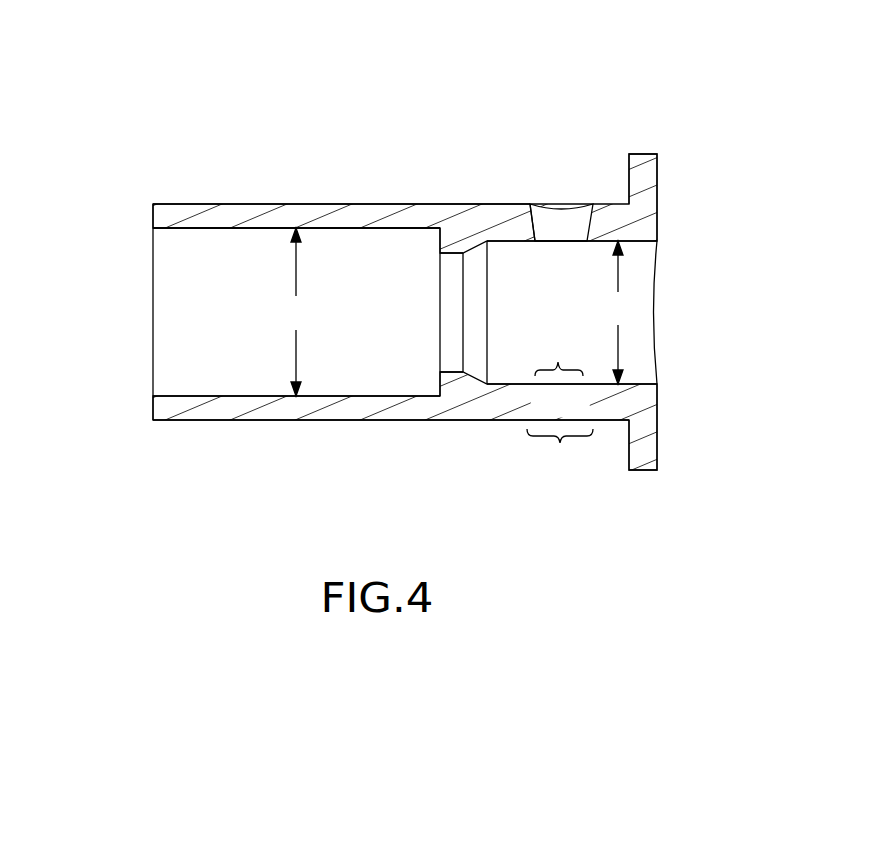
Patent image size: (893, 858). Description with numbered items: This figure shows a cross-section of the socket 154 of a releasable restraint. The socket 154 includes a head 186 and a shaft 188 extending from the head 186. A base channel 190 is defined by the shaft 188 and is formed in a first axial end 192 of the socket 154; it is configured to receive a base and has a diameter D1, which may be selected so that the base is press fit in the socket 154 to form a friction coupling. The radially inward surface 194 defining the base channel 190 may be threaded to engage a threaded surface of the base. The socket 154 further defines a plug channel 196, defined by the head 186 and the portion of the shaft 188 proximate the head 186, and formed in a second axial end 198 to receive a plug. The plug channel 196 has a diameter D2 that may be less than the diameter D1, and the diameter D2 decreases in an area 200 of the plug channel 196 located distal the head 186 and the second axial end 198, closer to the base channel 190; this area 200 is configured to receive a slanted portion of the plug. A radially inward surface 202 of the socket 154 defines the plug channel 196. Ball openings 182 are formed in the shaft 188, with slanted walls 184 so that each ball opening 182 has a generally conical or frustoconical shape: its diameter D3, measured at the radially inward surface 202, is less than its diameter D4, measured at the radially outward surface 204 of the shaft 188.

The socket 154 is at (182, 76).
The ball opening 182 is at (567, 189).
The walls 184 is at (532, 221).
The head 186 is at (630, 482).
The shaft 188 is at (163, 482).
The base channel 190 is at (216, 257).
The first axial end 192 is at (153, 214).
The radially inward surface 194 is at (296, 276).
The plug channel 196 is at (643, 264).
The second axial end 198 is at (657, 178).
The area 200 is at (500, 313).
The radially inward surface 202 is at (572, 312).
The radially outward surface 204 is at (361, 204).
The diameter D1 is at (294, 312).
The diameter D2 is at (619, 312).
The diameter D3 is at (559, 353).
The diameter D4 is at (560, 451).